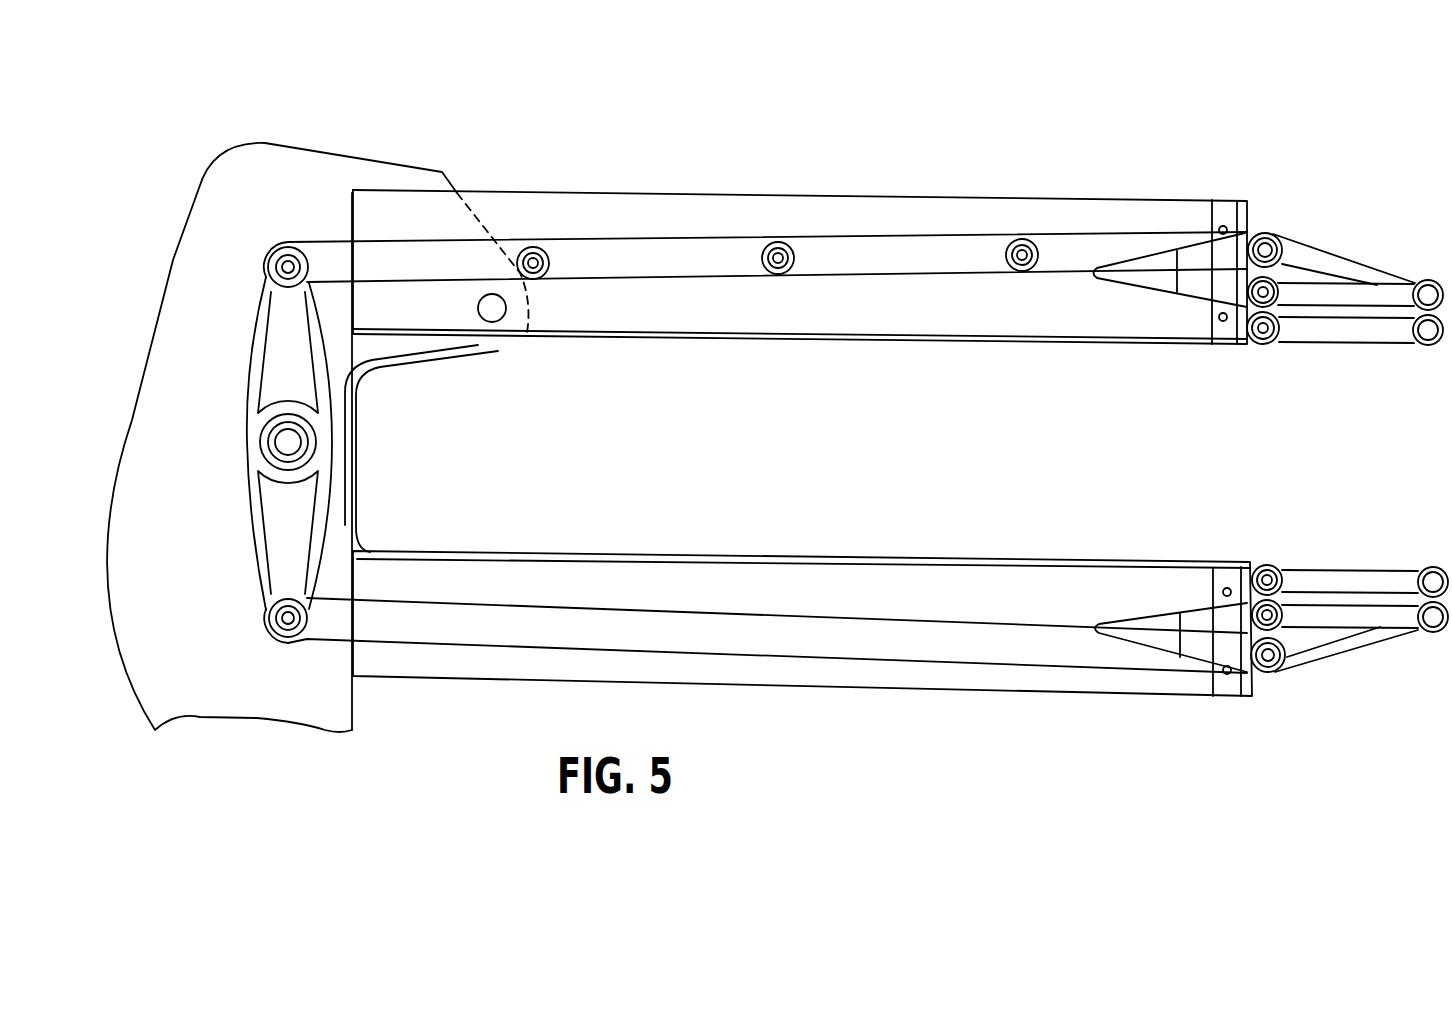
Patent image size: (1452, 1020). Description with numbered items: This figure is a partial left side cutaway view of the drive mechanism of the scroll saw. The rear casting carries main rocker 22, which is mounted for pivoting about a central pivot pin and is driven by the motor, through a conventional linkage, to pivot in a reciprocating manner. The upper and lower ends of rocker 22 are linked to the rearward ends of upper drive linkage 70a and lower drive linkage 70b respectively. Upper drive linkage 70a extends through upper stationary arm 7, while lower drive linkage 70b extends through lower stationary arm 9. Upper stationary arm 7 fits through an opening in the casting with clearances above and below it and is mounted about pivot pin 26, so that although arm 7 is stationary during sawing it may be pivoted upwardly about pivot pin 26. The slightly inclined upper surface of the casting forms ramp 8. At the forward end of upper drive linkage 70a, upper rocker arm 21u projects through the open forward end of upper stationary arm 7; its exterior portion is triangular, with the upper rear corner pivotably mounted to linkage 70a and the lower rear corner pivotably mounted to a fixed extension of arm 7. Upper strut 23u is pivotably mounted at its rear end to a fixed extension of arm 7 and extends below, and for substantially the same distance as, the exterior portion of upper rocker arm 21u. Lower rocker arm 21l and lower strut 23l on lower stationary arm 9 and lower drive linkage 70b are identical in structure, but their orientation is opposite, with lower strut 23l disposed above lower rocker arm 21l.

The ramp 8 is at (362, 158).
The upper stationary arm 7 is at (792, 208).
The lower stationary arm 9 is at (848, 687).
The upper drive linkage 70a is at (862, 260).
The lower drive linkage 70b is at (1037, 657).
The main rocker 22 is at (278, 507).
The pivot pin 26 is at (495, 312).
The upper rocker arm 21u is at (1347, 260).
The upper strut 23u is at (1328, 335).
The lower rocker arm 21l is at (1338, 570).
The lower strut 23l is at (1393, 635).